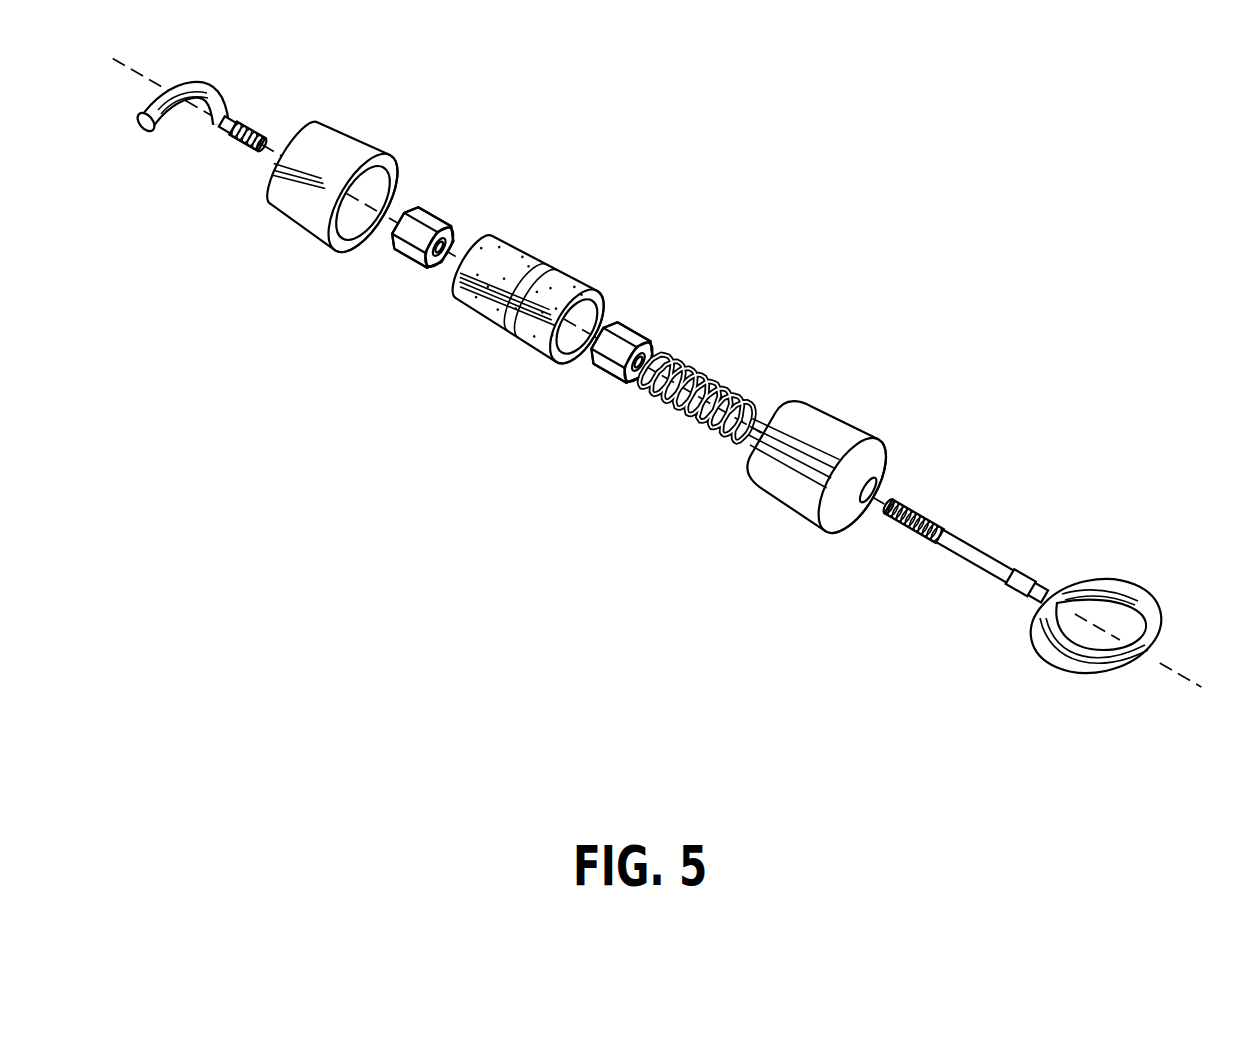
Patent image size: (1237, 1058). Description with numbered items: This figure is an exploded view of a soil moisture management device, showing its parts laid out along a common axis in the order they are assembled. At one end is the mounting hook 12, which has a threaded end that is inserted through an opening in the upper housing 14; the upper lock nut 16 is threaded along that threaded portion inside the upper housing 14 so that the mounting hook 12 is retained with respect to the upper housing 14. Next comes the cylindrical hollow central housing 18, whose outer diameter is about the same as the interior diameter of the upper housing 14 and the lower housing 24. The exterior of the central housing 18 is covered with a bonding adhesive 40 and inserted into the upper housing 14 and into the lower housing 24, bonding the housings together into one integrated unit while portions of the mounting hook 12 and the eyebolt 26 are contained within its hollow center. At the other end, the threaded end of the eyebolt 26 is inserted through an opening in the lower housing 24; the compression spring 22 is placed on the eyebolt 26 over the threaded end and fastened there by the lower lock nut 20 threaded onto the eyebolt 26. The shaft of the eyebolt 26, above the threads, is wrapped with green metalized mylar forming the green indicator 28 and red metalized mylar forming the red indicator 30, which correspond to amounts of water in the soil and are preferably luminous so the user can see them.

The mounting hook 12 is at (225, 104).
The upper housing 14 is at (336, 147).
The upper lock nut 16 is at (403, 258).
The cylindrical hollow central housing 18 is at (528, 298).
The lower lock nut 20 is at (632, 330).
The compression spring 22 is at (695, 415).
The lower housing 24 is at (830, 422).
The eyebolt 26 is at (1097, 670).
The green indicator 28 is at (970, 553).
The red indicator 30 is at (1020, 578).
The bonding adhesive 40 is at (497, 258).